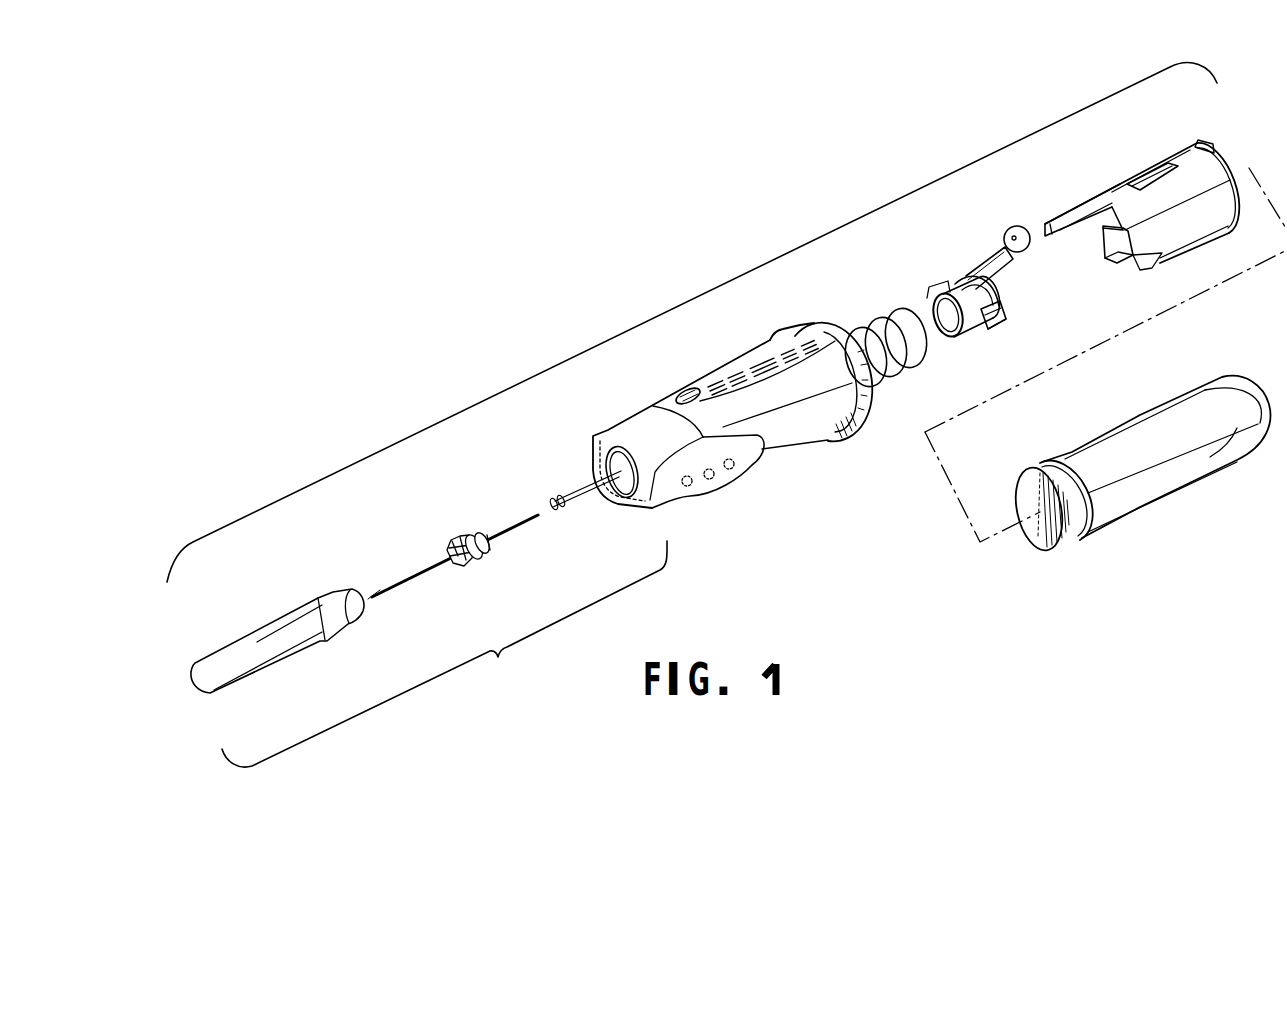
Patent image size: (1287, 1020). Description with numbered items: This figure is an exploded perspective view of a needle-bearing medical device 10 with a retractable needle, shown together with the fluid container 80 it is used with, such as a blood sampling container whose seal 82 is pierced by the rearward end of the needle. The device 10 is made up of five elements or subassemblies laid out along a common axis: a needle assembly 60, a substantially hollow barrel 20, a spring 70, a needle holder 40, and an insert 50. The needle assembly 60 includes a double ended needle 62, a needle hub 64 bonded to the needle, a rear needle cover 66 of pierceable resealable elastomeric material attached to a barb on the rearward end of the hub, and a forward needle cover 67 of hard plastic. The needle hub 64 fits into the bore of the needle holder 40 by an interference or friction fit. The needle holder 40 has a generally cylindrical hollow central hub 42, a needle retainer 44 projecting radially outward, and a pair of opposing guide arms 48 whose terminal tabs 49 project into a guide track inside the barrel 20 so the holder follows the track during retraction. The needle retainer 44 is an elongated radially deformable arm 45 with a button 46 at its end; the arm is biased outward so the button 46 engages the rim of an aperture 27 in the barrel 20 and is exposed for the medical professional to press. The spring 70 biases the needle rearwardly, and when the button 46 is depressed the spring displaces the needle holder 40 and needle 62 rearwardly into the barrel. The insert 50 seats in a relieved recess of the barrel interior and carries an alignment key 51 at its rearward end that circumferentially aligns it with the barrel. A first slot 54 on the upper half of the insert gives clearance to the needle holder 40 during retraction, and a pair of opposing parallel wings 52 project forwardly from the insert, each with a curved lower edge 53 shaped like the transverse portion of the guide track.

The needle-bearing medical device 10 is at (717, 287).
The barrel 20 is at (636, 426).
The aperture 27 is at (685, 389).
The needle holder 40 is at (970, 345).
The central hub 42 is at (997, 287).
The needle retainer 44 is at (960, 261).
The arm 45 is at (988, 260).
The button 46 is at (1019, 228).
The guide arms 48 is at (1006, 312).
The tab 49 is at (995, 327).
The insert 50 is at (1167, 143).
The alignment key 51 is at (1206, 144).
The wings 52 is at (1116, 264).
The lower edge 53 is at (1067, 230).
The first slot 54 is at (1126, 186).
The needle assembly 60 is at (444, 654).
The double ended needle 62 is at (410, 582).
The needle hub 64 is at (474, 566).
The rear needle cover 66 is at (580, 500).
The forward needle cover 67 is at (266, 634).
The spring 70 is at (922, 362).
The fluid container 80 is at (1168, 470).
The seal 82 is at (1043, 524).